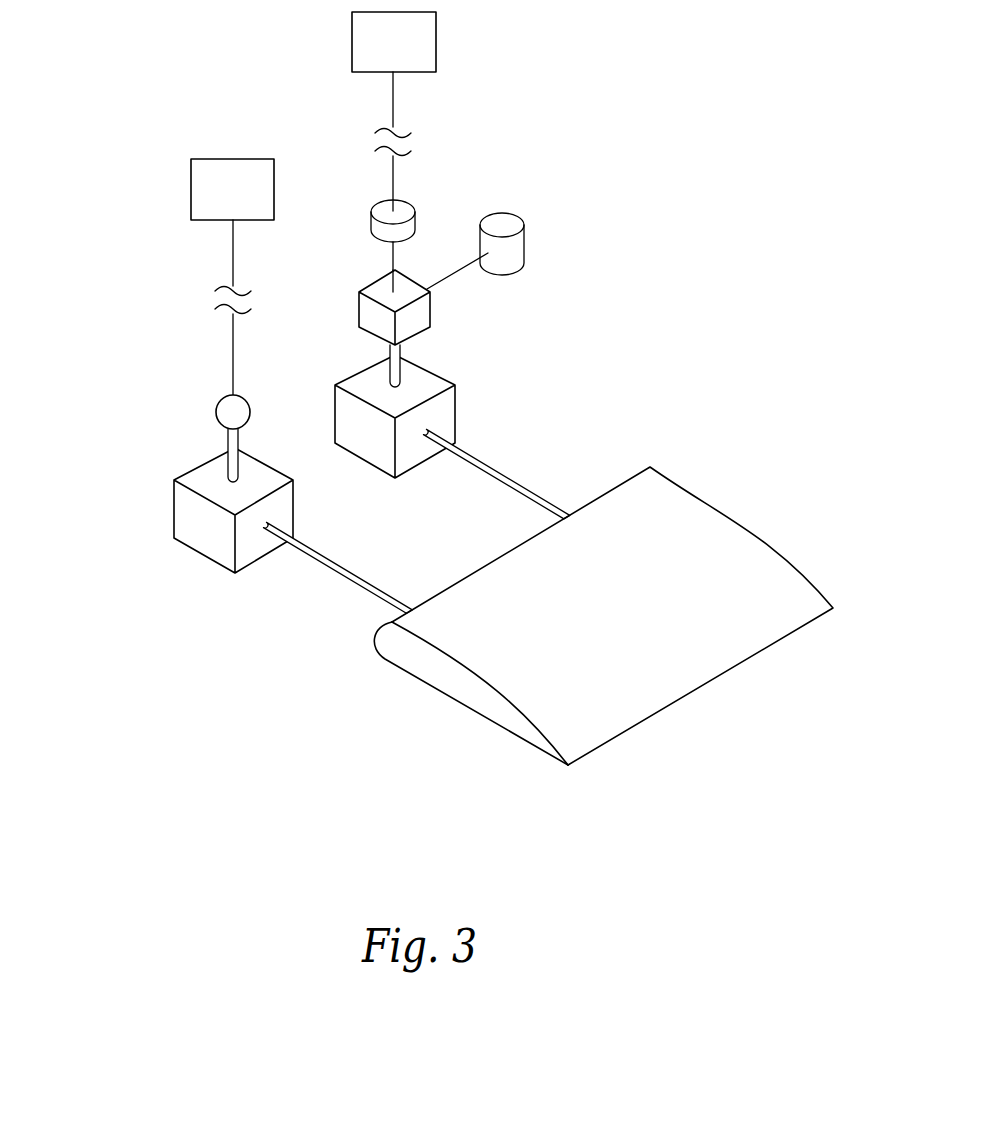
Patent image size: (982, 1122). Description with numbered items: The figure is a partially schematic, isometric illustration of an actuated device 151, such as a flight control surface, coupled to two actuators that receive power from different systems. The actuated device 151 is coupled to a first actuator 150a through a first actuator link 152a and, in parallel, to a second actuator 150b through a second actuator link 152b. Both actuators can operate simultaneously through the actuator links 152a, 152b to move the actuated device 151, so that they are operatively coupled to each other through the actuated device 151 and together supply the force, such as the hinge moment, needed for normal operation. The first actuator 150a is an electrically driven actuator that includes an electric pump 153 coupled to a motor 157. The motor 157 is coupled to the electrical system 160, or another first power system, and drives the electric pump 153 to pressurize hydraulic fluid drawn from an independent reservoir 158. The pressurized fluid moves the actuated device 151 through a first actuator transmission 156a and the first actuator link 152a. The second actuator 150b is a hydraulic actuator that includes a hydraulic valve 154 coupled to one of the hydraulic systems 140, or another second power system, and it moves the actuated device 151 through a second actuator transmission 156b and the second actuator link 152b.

The hydraulic system 140 is at (191, 190).
The electrical system 160 is at (436, 42).
The first actuator 150a is at (524, 295).
The second actuator 150b is at (216, 435).
The actuated device 151 is at (470, 692).
The first actuator link 152a is at (499, 470).
The second actuator link 152b is at (322, 568).
The electric pump 153 is at (430, 317).
The hydraulic valve 154 is at (216, 412).
The first actuator transmission 156a is at (455, 396).
The second actuator transmission 156b is at (203, 535).
The motor 157 is at (417, 215).
The independent reservoir 158 is at (523, 230).